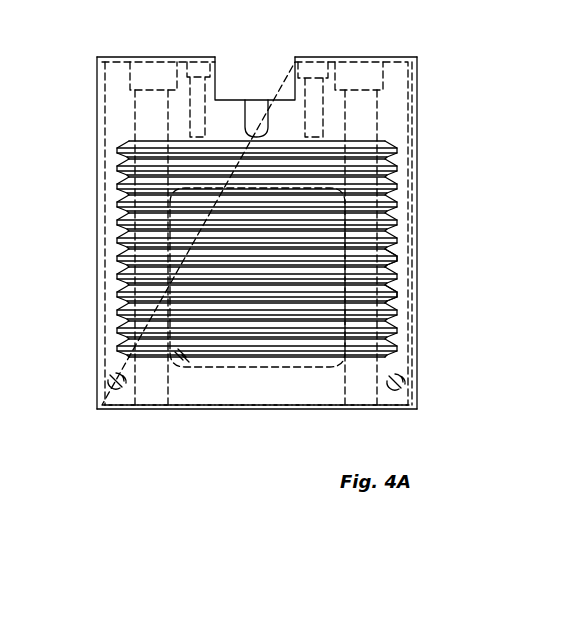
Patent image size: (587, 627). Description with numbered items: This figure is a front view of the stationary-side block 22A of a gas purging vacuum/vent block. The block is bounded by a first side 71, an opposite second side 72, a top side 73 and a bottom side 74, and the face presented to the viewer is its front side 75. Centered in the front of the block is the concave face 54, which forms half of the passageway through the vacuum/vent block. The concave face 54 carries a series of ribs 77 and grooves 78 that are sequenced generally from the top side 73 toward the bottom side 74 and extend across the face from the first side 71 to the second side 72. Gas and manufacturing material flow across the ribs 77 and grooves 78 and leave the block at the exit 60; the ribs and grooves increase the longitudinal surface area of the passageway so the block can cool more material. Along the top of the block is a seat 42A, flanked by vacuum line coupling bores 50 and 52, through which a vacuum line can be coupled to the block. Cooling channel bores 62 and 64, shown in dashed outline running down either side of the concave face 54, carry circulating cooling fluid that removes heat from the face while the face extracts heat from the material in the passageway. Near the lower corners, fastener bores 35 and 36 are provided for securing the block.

The stationary-side block 22A is at (403, 63).
The top side 73 is at (110, 54).
The first side 71 is at (94, 113).
The second side 72 is at (424, 102).
The bottom side 74 is at (216, 415).
The front side 75 is at (317, 395).
The seat 42A is at (233, 80).
The exit 60 is at (260, 115).
The cooling channel bore 64 is at (158, 102).
The cooling channel bore 62 is at (362, 100).
The vacuum line coupling bore 50 is at (197, 68).
The vacuum line coupling bore 52 is at (315, 72).
The concave face 54 is at (392, 168).
The ribs 77 is at (408, 262).
The grooves 78 is at (404, 302).
The fastener bore 35 is at (113, 382).
The fastener bore 36 is at (403, 387).